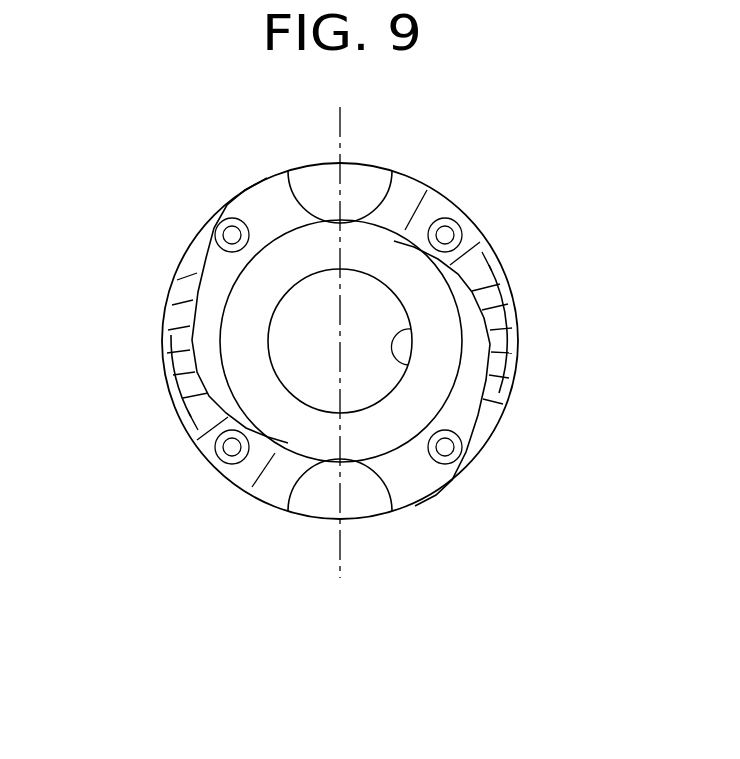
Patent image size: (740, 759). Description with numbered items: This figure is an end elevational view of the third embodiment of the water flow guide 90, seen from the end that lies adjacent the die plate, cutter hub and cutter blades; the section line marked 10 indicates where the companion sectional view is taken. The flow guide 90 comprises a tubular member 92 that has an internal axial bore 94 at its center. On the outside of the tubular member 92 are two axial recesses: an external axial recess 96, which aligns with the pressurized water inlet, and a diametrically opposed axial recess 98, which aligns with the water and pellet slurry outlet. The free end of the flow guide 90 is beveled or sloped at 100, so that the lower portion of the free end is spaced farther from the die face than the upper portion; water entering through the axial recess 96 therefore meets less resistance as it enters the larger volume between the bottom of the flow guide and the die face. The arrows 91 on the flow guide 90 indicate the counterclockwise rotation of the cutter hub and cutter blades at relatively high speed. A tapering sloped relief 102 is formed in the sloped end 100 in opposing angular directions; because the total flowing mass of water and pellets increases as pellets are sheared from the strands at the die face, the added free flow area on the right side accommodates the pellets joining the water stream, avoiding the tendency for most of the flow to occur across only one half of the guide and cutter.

The section line 10- 10 is at (355, 117).
The water flow guide 90 is at (470, 182).
The arrows 91 is at (178, 394).
The tubular member 92 is at (481, 227).
The internal axial bore 94 is at (408, 366).
The external axial recess 96 is at (371, 502).
The axial recess 98 is at (388, 192).
The sloped free end 100 is at (470, 411).
The tapering sloped relief 102 is at (503, 290).